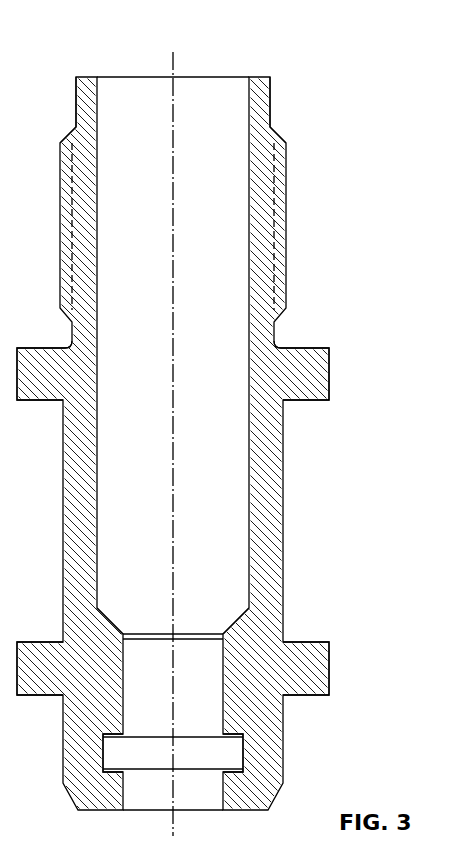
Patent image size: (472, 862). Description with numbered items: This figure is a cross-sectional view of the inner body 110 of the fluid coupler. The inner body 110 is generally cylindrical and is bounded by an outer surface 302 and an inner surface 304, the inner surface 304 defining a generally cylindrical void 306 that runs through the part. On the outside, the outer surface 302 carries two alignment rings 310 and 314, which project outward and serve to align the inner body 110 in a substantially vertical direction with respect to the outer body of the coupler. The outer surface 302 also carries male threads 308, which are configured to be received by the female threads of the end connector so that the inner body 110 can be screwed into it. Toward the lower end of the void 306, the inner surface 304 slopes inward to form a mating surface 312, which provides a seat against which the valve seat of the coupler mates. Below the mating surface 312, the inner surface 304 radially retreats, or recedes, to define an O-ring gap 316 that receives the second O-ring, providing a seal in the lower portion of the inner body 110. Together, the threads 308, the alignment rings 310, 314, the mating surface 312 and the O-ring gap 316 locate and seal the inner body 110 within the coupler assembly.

The inner body 110 is at (234, 432).
The outer surface 302 is at (271, 103).
The inner surface 304 is at (98, 98).
The generally cylindrical void 306 is at (208, 97).
The male threads 308 is at (278, 170).
The alignment ring 310 is at (311, 375).
The mating surface 312 is at (239, 627).
The alignment ring 314 is at (294, 678).
The O-ring gap 316 is at (243, 752).